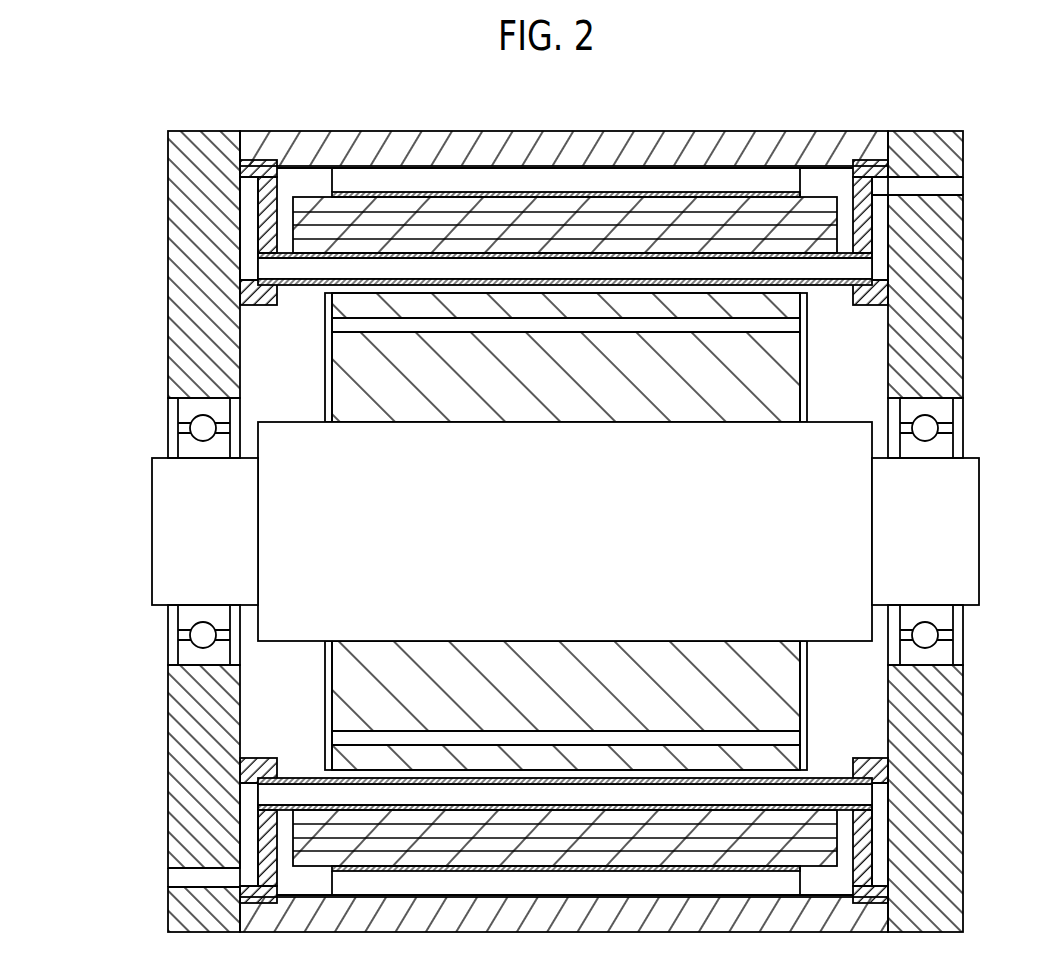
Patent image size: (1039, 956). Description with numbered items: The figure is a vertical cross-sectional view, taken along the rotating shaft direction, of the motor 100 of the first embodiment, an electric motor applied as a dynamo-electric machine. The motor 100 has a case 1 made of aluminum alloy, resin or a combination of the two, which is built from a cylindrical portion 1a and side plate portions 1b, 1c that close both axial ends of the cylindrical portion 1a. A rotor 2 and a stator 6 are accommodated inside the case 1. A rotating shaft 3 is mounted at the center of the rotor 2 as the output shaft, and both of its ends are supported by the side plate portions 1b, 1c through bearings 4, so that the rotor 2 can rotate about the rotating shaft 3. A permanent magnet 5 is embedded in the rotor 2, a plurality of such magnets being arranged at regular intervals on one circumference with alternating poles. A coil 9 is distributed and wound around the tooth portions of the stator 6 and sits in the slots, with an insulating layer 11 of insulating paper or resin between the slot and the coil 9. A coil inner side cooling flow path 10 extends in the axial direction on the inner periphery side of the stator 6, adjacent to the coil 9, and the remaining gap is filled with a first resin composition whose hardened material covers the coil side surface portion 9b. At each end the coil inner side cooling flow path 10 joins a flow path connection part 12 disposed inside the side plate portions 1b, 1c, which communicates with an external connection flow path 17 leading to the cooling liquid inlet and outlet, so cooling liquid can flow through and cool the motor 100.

The motor 100 is at (124, 132).
The case 1 is at (631, 131).
The cylindrical portion 1a is at (682, 131).
The side plate portion 1b is at (167, 302).
The side plate portion 1c is at (963, 297).
The rotor 2 is at (807, 380).
The rotating shaft 3 is at (980, 482).
The bearing 4 is at (947, 410).
The permanent magnet 5 is at (789, 325).
The stator 6 is at (763, 178).
The coil 9 is at (821, 197).
The coil side surface portion 9b is at (583, 262).
The coil inner side cooling flow path 10 is at (858, 268).
The insulating layer 11 is at (298, 285).
The flow path connection part 12 is at (872, 236).
The external connection flow path 17 is at (920, 186).